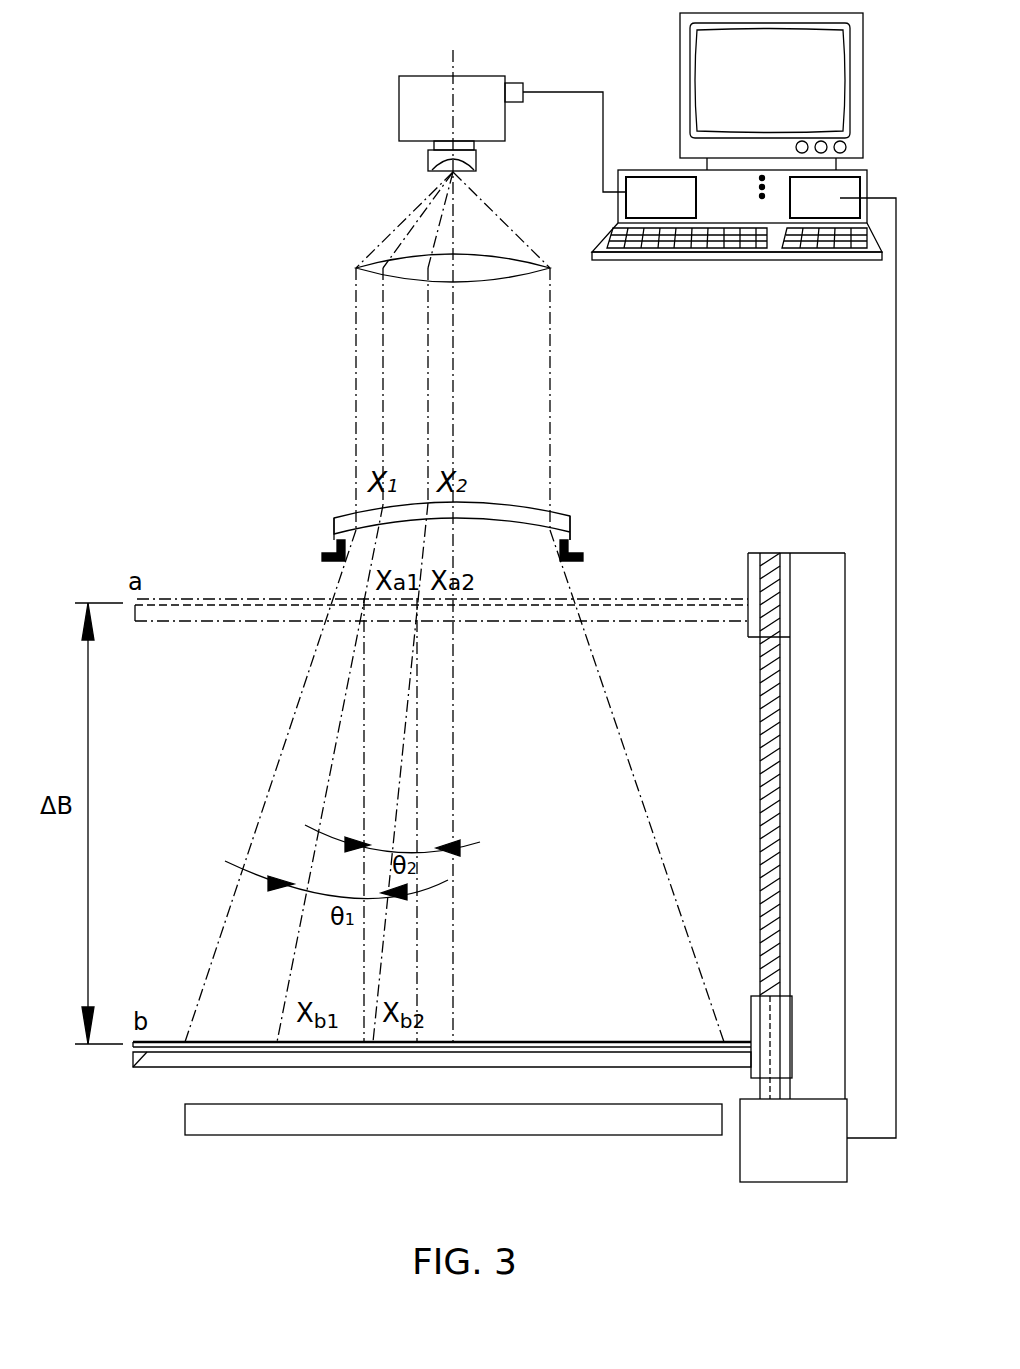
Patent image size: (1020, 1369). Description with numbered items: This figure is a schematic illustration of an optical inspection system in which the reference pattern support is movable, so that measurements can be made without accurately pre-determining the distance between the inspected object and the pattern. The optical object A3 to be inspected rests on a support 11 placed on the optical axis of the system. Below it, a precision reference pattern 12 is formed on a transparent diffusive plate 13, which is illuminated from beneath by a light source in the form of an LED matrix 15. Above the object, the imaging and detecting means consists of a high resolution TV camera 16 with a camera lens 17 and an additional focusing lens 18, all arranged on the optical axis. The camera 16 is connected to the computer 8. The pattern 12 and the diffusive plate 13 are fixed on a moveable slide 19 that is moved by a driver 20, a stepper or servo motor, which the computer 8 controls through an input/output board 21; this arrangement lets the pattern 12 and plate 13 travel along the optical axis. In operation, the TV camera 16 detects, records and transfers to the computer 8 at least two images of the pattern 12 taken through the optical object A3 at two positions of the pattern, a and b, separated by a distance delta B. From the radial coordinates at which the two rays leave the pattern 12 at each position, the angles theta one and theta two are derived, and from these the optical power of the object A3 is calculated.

The computer 8 is at (733, 208).
The support 11 is at (343, 528).
The precision reference pattern 12 is at (137, 1062).
The transparent diffusive plate 13 is at (182, 1058).
The LED matrix 15 is at (210, 1128).
The high resolution TV camera 16 is at (413, 116).
The camera lens 17 is at (440, 158).
The additional focusing lens 18 is at (357, 270).
The moveable slide 19 is at (762, 1017).
The driver 20 is at (815, 1153).
The input/output board 21 is at (812, 200).
The optical object A3 is at (563, 530).